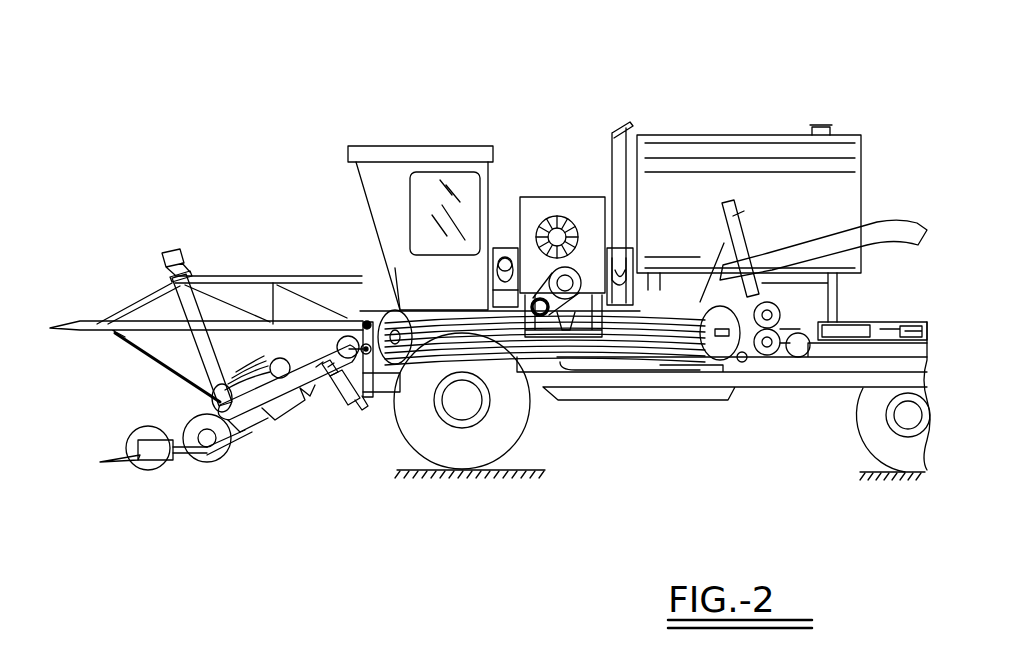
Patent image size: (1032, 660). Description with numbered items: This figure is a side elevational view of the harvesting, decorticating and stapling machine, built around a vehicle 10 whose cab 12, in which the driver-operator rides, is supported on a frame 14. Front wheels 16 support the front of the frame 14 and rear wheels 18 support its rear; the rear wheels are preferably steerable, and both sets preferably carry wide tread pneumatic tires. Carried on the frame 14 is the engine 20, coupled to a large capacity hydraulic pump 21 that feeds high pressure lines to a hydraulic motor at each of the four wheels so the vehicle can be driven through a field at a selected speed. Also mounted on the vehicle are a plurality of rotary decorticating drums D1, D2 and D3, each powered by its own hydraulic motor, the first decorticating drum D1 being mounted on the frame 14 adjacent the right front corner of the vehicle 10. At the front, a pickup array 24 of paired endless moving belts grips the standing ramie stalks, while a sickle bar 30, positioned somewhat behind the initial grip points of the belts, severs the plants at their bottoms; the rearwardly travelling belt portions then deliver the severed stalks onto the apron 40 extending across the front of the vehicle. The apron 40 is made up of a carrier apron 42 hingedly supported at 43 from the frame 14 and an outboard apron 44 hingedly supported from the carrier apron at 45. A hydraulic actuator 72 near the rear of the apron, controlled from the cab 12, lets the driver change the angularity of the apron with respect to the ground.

The vehicle 10 is at (420, 90).
The cab 12 is at (372, 148).
The frame 14 is at (790, 382).
The front wheels 16 is at (428, 455).
The rear wheels 18 is at (875, 440).
The engine 20 is at (566, 195).
The hydraulic pump 21 is at (612, 275).
The pickup array 24 is at (80, 322).
The sickle bar 30 is at (108, 458).
The apron 40 is at (262, 240).
The carrier apron 42 is at (288, 432).
The hinge support 43 is at (372, 375).
The outboard apron 44 is at (158, 290).
The hinge support 45 is at (368, 305).
The hydraulic actuator 72 is at (352, 398).
The first decorticating drum D1 is at (218, 403).
The second decorticating drum D2 is at (525, 357).
The third decorticating drum D3 is at (650, 360).